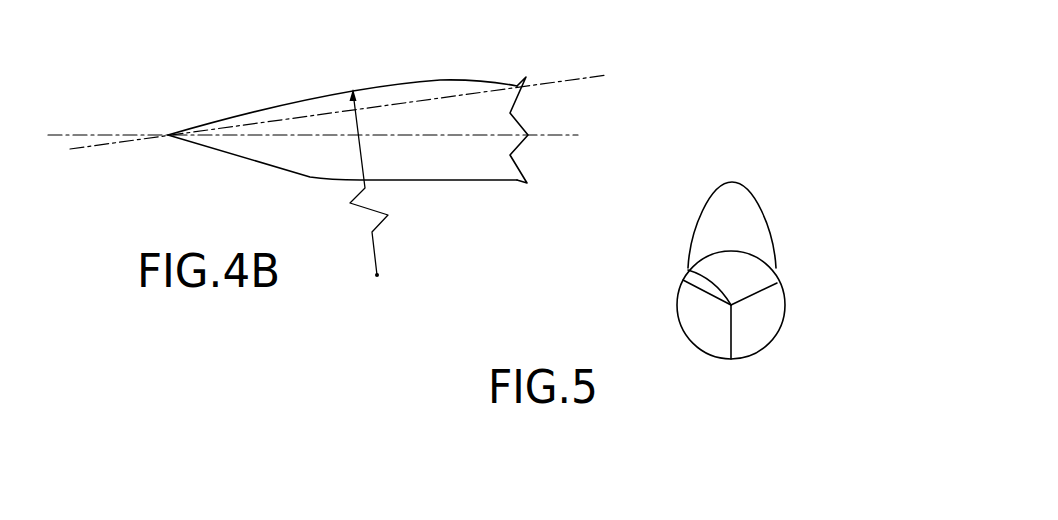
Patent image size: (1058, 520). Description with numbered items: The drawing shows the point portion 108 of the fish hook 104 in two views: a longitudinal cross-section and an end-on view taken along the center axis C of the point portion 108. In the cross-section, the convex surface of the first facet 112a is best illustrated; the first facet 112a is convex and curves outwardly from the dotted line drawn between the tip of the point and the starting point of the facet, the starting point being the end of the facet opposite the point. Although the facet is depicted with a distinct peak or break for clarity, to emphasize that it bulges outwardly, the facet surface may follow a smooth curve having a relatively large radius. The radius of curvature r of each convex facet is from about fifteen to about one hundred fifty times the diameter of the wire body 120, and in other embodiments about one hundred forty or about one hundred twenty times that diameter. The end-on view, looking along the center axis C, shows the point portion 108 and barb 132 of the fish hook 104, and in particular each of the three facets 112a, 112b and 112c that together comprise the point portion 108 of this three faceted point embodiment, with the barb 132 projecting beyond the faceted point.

In FIG. 4B, the first facet 112a is at (395, 80).
In FIG. 5, the first facet 112a is at (767, 273).
In FIG. 5, the second facet 112b is at (770, 330).
In FIG. 5, the third facet 112c is at (703, 343).
In FIG. 5, the fish hook 104 is at (677, 300).
In FIG. 5, the point portion 108 is at (760, 352).
In FIG. 5, the wire body 120 is at (783, 313).
In FIG. 5, the barb 132 is at (763, 208).
In FIG. 4B, the radius of curvature r is at (372, 183).
In FIG. 5, the center axis C is at (690, 272).